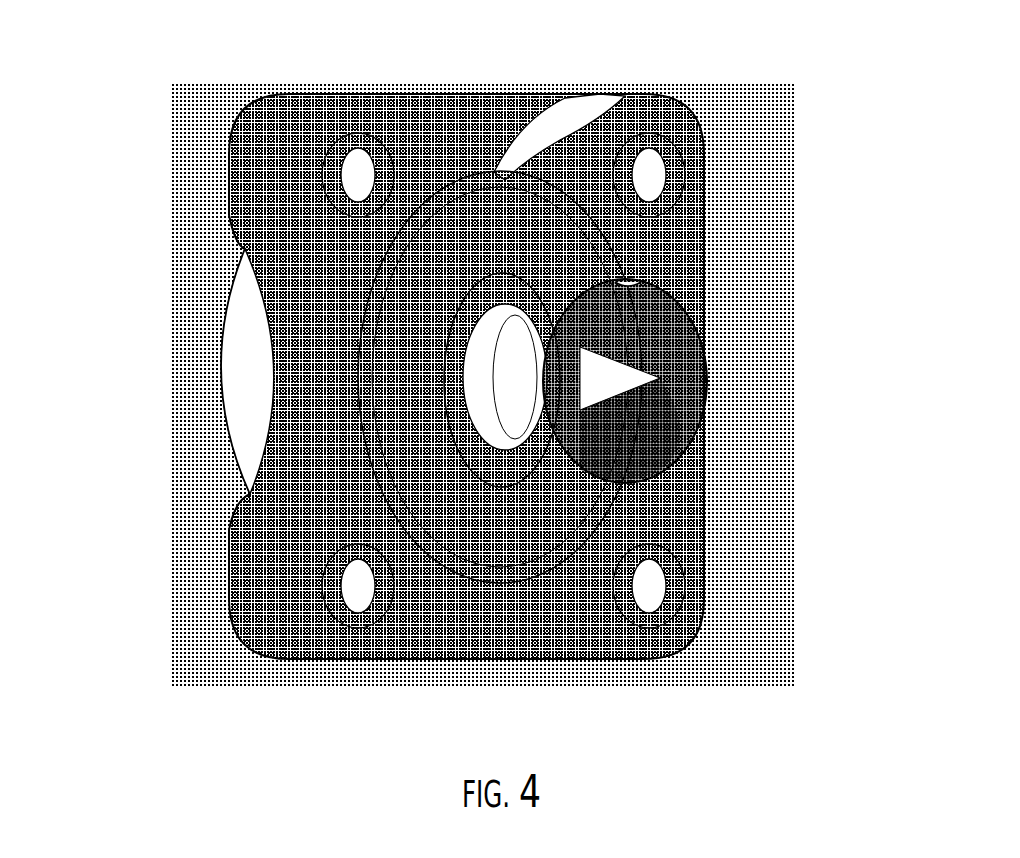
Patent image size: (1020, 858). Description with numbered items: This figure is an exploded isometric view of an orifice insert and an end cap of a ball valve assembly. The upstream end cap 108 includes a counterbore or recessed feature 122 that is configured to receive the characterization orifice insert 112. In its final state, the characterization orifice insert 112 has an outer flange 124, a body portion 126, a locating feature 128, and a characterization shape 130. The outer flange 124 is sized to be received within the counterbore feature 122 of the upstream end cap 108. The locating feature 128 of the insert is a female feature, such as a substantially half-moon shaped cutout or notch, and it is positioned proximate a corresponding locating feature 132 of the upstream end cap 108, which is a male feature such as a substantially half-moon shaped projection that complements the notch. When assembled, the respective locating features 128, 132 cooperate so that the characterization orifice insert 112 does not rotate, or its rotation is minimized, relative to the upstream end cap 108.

The upstream end cap 108 is at (206, 352).
The characterization orifice insert 112 is at (736, 358).
The counterbore feature 122 is at (495, 483).
The outer flange 124 is at (694, 414).
The body portion 126 is at (640, 431).
The locating feature 128 is at (628, 282).
The characterization shape 130 is at (643, 357).
The locating feature 132 is at (519, 273).